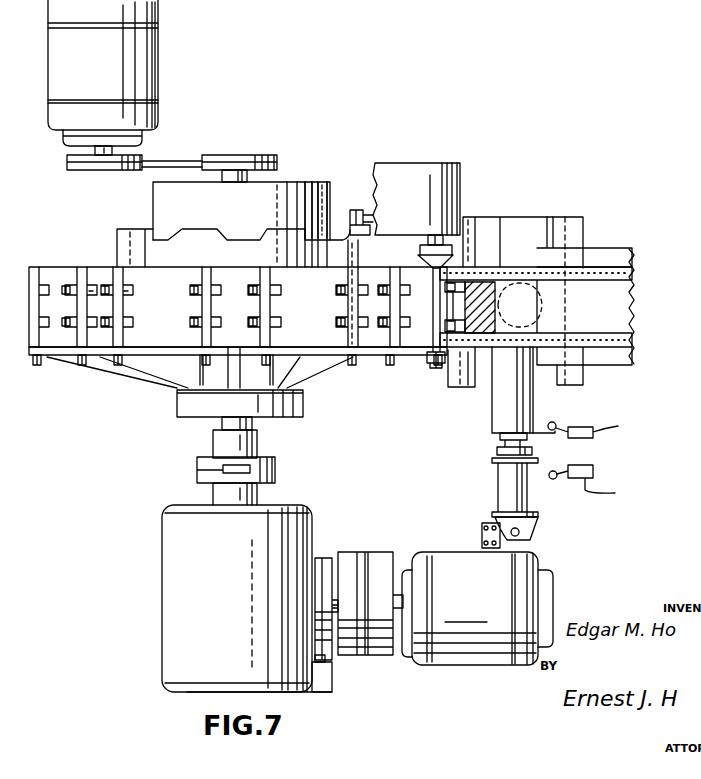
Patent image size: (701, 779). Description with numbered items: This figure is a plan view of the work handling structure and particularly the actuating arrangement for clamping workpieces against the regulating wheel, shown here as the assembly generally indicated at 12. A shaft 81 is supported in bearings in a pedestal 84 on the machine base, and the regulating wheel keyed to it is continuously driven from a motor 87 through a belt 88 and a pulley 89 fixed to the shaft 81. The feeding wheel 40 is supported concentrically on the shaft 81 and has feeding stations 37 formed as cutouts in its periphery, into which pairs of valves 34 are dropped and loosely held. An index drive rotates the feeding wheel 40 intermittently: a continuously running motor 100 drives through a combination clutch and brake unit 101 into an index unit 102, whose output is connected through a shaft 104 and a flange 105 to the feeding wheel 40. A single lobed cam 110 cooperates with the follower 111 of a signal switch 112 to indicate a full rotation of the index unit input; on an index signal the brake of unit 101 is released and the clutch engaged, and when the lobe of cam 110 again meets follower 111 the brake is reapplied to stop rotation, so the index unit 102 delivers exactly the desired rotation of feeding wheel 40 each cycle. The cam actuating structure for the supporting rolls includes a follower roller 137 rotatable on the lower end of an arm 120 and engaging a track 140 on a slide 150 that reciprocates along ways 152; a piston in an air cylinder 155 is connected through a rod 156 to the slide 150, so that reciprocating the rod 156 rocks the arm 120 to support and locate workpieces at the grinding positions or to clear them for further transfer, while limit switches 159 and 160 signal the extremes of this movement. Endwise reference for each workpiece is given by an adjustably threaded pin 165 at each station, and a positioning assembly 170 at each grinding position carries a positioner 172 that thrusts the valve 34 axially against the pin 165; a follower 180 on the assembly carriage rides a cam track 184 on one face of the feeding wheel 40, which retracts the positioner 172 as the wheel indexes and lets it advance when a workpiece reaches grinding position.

The drive assembly 12 is at (173, 436).
The valve 34 is at (432, 335).
The feeding station 37 is at (97, 290).
The feeding wheel 40 is at (65, 275).
The shaft 81 is at (248, 178).
The pedestal 84 is at (318, 190).
The motor 87 is at (160, 58).
The belt 88 is at (166, 162).
The pulley 89 is at (266, 155).
The motor 100 is at (487, 665).
The combination clutch and brake unit 101 is at (383, 655).
The index unit 102 is at (188, 596).
The shaft 104 is at (255, 447).
The flange 105 is at (300, 407).
The single lobed cam 110 is at (325, 565).
The follower 111 is at (318, 660).
The signal switch 112 is at (326, 692).
The arm 120 is at (480, 282).
The follower roller 137 is at (538, 315).
The track 140 is at (507, 232).
The slide 150 is at (490, 232).
The ways 152 is at (462, 380).
The air cylinder 155 is at (507, 483).
The rod 156 is at (505, 418).
The limit switch 159 is at (590, 428).
The limit switch 160 is at (596, 484).
The pin 165 is at (433, 372).
The positioning assembly 170 is at (446, 155).
The positioner 172 is at (418, 250).
The follower 180 is at (360, 208).
The cam track 184 is at (135, 240).